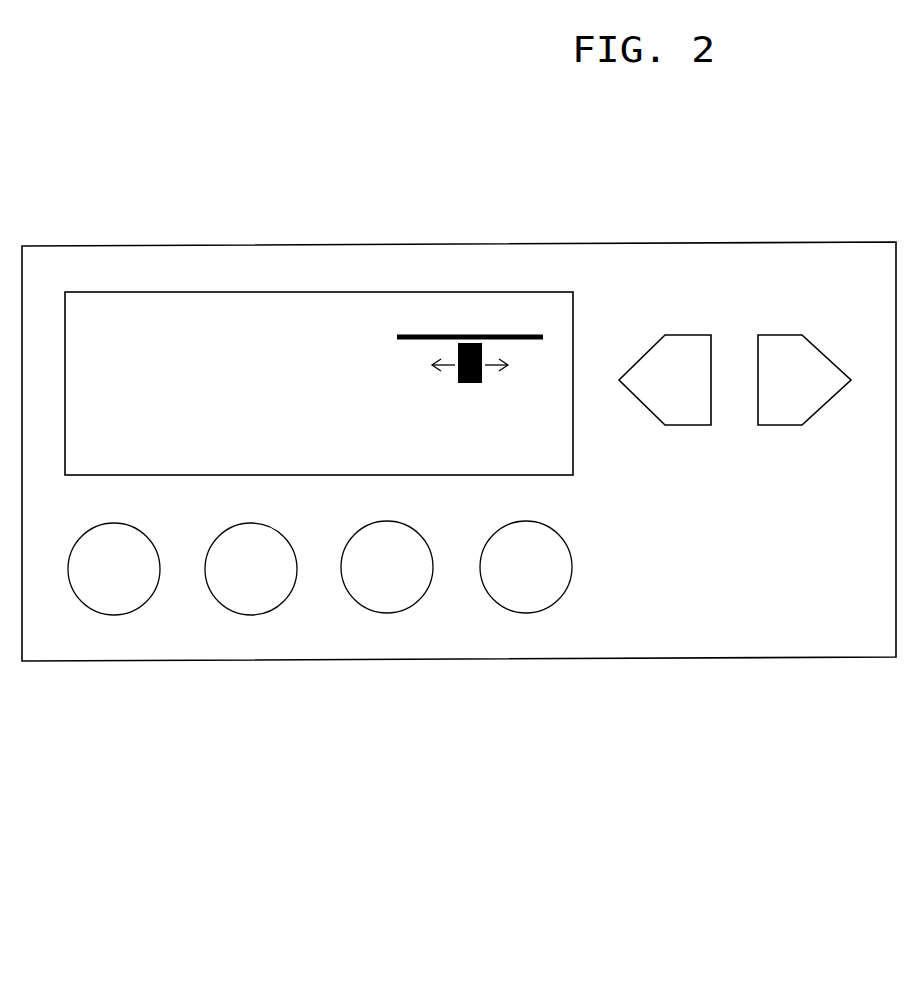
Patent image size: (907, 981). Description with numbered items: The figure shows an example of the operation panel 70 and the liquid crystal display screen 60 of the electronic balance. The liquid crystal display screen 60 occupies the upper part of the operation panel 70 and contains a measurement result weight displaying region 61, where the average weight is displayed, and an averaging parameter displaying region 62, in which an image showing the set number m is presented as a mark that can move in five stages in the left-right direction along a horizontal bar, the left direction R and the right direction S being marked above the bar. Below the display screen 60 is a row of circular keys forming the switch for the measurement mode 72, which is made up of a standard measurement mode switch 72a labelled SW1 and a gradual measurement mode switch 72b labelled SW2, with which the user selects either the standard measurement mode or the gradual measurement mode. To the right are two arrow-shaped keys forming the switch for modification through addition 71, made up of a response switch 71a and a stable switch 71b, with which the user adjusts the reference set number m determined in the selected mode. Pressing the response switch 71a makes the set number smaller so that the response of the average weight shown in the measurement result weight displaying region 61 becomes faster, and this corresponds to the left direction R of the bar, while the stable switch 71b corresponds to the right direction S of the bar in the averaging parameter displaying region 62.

The liquid crystal display screen 60 is at (319, 283).
The measurement result weight displaying region 61 is at (227, 345).
The averaging parameter displaying region 62 is at (470, 272).
The operation panel 70 is at (459, 489).
The switch for modification through addition 71 is at (735, 576).
The response switch 71a is at (687, 425).
The stable switch 71b is at (788, 425).
The switch for the measurement mode 72 is at (182, 673).
The standard measurement mode switch 72a is at (120, 615).
The gradual measurement mode switch 72b is at (251, 615).